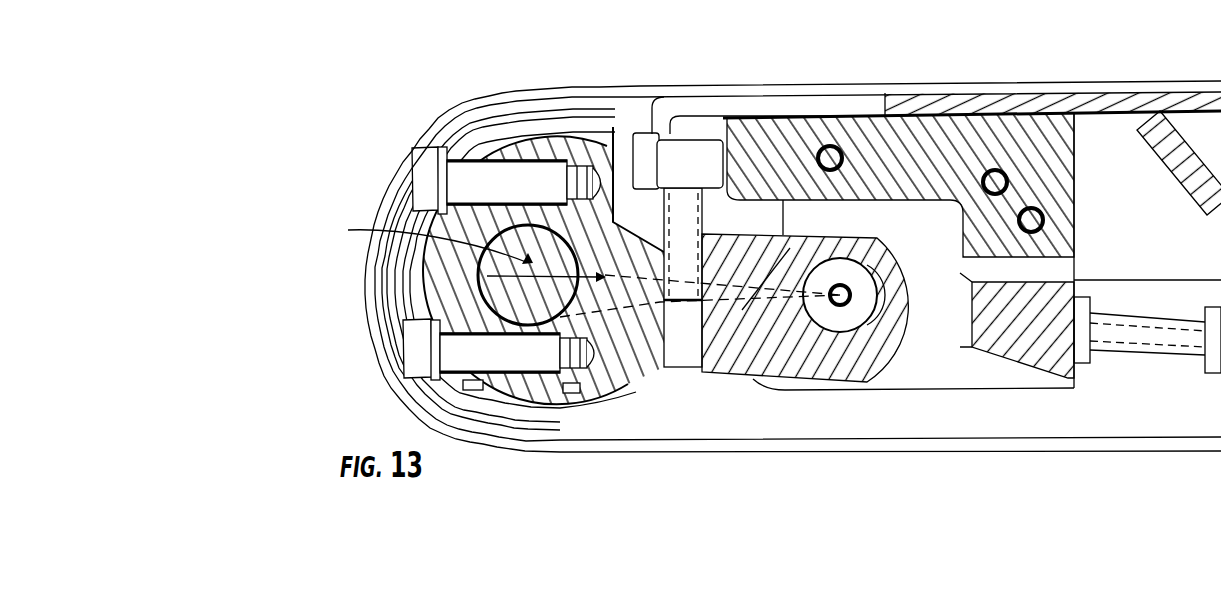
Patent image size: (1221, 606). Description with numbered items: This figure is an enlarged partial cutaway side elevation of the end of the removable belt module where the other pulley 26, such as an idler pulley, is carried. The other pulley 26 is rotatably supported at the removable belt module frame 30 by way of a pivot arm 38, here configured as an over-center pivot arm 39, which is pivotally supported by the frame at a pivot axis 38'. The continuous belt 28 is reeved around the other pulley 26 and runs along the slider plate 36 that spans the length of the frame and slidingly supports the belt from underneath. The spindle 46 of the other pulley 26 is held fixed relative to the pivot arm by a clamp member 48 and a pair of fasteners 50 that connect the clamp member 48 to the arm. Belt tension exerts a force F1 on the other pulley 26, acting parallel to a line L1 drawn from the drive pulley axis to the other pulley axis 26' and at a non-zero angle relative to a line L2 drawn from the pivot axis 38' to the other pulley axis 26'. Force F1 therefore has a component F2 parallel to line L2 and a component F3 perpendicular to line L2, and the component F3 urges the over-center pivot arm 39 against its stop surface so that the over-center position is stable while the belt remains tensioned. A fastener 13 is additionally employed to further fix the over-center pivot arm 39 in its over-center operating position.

The fastener 13 is at (698, 181).
The other pulley 26 is at (531, 271).
The other pulley axis 26' is at (494, 265).
The continuous belt 28 is at (1015, 82).
The removable belt module frame 30 is at (1203, 254).
The slider plate 36 is at (1117, 115).
The pivot arm 38 is at (805, 335).
The pivot axis 38' is at (861, 279).
The over-center pivot arm 39 is at (775, 382).
The spindle 46 is at (413, 222).
The clamp member 48 is at (482, 282).
The fasteners 50 is at (436, 193).
The force F1 is at (524, 182).
The force component F2 is at (517, 353).
The force component F3 is at (428, 242).
The line L1 is at (744, 300).
The line L2 is at (790, 248).